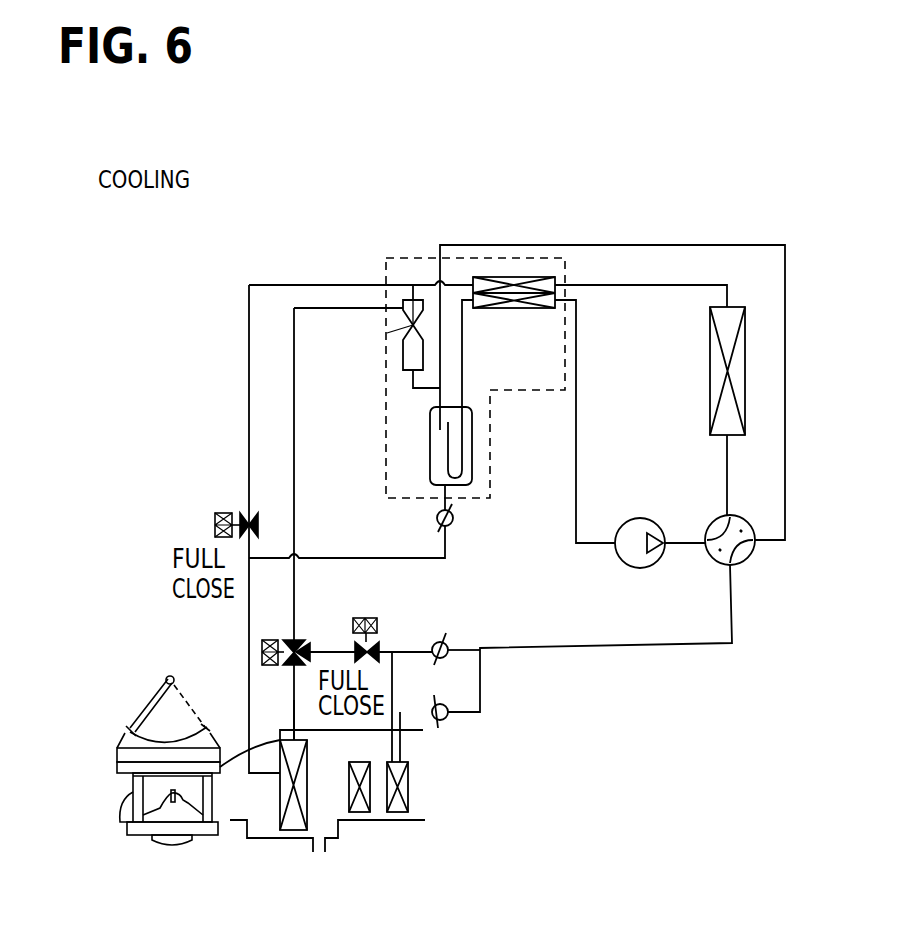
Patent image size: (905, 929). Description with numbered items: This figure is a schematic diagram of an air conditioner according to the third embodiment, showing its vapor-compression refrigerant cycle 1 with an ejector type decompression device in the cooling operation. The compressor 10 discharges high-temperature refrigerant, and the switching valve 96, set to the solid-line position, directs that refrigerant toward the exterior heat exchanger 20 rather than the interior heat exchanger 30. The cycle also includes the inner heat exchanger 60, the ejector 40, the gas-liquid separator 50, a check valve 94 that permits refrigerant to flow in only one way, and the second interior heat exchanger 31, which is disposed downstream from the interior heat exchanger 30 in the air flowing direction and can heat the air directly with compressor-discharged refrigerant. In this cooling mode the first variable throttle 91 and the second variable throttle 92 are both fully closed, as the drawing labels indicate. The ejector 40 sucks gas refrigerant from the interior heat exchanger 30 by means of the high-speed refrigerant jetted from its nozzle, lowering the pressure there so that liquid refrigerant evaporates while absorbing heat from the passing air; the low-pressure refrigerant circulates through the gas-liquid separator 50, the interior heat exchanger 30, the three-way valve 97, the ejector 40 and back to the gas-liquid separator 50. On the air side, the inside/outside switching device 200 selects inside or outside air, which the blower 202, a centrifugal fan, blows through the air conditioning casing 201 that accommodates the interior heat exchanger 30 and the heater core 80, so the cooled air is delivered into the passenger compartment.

The refrigerant cycle 1 is at (725, 232).
The compressor 10 is at (652, 518).
The exterior heat exchanger 20 is at (710, 372).
The interior heat exchanger 30 is at (277, 790).
The second interior heat exchanger 31 is at (412, 790).
The ejector 40 is at (412, 328).
The gas-liquid separator 50 is at (472, 443).
The inner heat exchanger 60 is at (510, 275).
The heater core 80 is at (373, 793).
The first variable throttle 91 is at (379, 645).
The second variable throttle 92 is at (245, 512).
The check valve 94 is at (455, 517).
The switching valve 96 is at (738, 518).
The three-way valve 97 is at (300, 645).
The inside/outside switching device 200 is at (137, 713).
The air conditioning casing 201 is at (308, 733).
The blower 202 is at (125, 815).